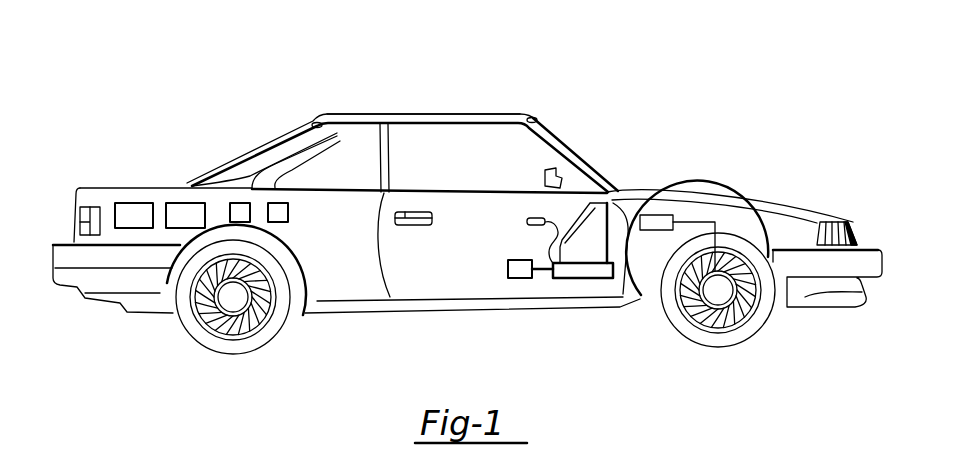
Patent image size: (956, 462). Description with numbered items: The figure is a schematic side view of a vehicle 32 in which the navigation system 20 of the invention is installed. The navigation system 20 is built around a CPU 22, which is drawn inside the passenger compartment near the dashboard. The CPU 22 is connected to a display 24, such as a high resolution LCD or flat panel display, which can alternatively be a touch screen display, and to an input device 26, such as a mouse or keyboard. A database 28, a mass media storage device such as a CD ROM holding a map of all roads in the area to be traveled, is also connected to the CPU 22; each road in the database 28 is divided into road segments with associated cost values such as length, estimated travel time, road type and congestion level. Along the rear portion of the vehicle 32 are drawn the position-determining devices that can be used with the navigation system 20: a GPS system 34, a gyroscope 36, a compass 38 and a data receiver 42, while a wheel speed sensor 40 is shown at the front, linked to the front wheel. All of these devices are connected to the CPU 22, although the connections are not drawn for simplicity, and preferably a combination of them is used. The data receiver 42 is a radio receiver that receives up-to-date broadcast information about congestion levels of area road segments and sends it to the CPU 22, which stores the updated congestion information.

The navigation system 20 is at (181, 64).
The CPU 22 is at (580, 279).
The display 24 is at (574, 215).
The input device 26 is at (525, 218).
The database 28 is at (517, 278).
The vehicle 32 is at (422, 100).
The GPS system 34 is at (128, 202).
The gyroscope 36 is at (180, 202).
The compass 38 is at (236, 202).
The wheel speed sensor 40 is at (657, 220).
The data receiver 42 is at (282, 202).